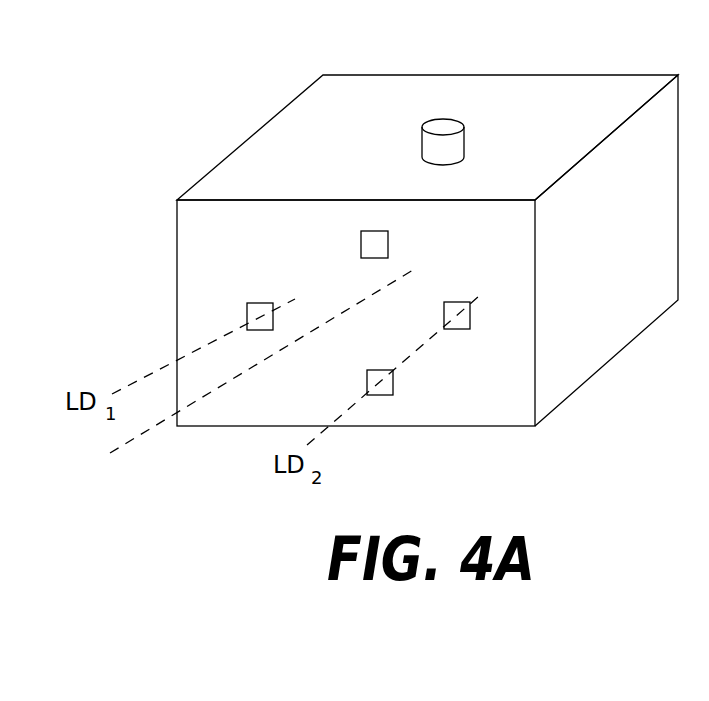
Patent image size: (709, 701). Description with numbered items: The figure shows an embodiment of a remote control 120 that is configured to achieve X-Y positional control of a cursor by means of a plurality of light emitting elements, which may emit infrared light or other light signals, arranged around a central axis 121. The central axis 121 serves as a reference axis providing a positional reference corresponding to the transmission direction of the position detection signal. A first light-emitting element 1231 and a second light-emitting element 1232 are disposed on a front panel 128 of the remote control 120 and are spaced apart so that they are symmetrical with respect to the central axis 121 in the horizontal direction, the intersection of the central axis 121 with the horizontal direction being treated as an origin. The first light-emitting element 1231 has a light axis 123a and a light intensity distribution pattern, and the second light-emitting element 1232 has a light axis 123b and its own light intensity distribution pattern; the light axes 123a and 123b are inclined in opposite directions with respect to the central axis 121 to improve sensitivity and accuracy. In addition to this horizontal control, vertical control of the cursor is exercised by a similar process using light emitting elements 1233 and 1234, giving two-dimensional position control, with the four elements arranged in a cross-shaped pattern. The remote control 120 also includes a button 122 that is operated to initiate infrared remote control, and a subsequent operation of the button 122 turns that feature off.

The remote control 120 is at (252, 162).
The button 122 is at (446, 124).
The front panel 128 is at (187, 260).
The first light-emitting element 1231 is at (262, 303).
The second light-emitting element 1232 is at (455, 330).
The light emitting element 1233 is at (388, 245).
The fourth light-emitting element 1234 is at (372, 370).
The light axis 123a is at (140, 382).
The light axis 123b is at (317, 437).
The central axis 121 is at (127, 437).